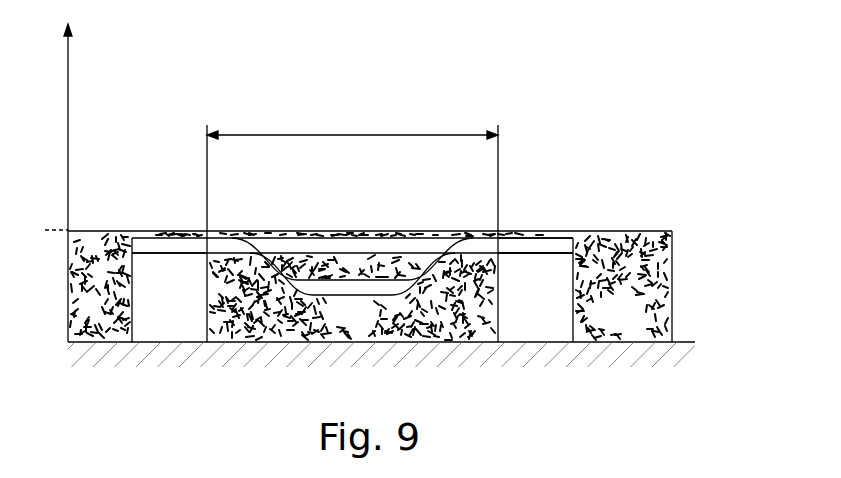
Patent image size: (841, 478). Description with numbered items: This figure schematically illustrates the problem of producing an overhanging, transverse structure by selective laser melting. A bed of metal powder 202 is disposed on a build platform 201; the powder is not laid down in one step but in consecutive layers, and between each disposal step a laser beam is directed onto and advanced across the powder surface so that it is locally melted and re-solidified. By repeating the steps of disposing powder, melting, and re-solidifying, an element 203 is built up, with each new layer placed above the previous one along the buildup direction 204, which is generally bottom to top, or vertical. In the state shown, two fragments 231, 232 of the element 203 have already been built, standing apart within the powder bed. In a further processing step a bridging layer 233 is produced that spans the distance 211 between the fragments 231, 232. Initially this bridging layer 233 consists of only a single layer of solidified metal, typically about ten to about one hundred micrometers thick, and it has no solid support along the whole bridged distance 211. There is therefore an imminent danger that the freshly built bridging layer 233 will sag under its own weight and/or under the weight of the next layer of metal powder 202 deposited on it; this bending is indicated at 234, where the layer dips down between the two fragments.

The build platform 201 is at (262, 395).
The metal powder 202 is at (98, 232).
The element 203 is at (535, 252).
The buildup direction 204 is at (81, 183).
The distance 211 is at (352, 181).
The fragment 231 is at (553, 323).
The fragment 232 is at (188, 321).
The bridging layer 233 is at (282, 250).
The bending 234 is at (368, 285).